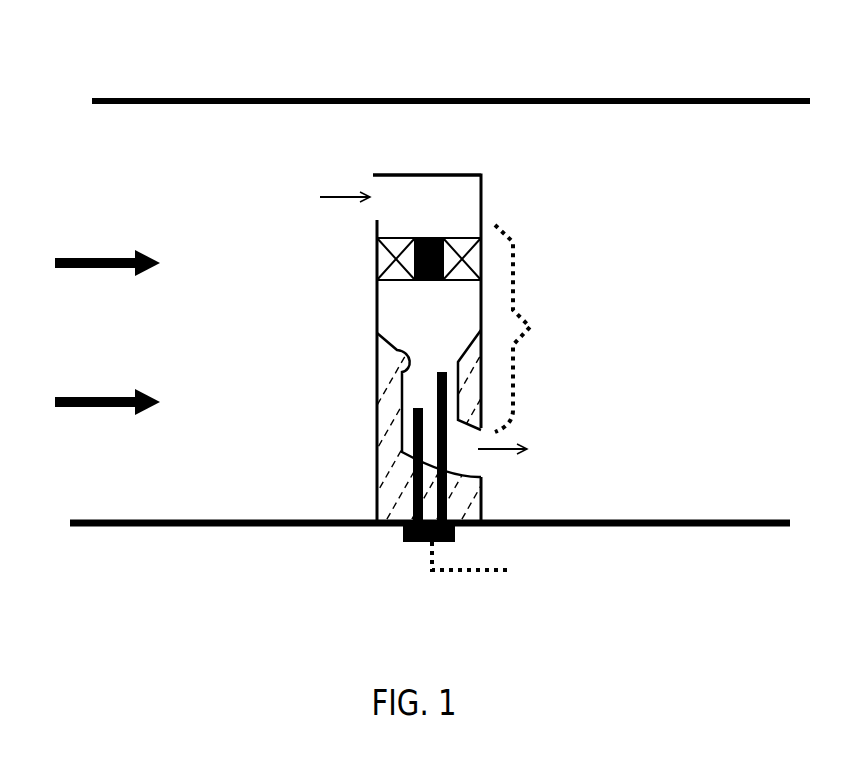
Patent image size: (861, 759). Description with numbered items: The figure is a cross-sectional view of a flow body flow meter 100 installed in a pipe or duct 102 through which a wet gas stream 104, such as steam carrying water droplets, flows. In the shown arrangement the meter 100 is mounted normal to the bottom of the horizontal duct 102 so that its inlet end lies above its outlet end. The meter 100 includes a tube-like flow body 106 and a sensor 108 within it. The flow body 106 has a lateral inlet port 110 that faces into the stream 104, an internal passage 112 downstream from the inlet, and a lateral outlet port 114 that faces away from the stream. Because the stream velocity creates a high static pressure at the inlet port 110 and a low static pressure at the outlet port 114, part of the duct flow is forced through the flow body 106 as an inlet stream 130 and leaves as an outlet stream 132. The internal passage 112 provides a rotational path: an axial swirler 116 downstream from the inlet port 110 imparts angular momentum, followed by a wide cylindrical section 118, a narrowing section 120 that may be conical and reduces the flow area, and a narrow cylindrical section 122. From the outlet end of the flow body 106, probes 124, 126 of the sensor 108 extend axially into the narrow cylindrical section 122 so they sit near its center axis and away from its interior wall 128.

The flow body flow meter 100 is at (312, 440).
The duct 102 is at (203, 100).
The wet gas stream 104 is at (85, 257).
The flow body 106 is at (416, 175).
The sensor 108 is at (403, 542).
The inlet port 110 is at (365, 184).
The internal passage 112 is at (540, 324).
The outlet port 114 is at (480, 460).
The axial swirler 116 is at (450, 278).
The wide cylindrical section 118 is at (435, 302).
The narrowing section 120 is at (436, 340).
The narrow cylindrical section 122 is at (420, 380).
The probe 124 is at (412, 420).
The probe 126 is at (445, 385).
The interior wall 128 is at (405, 360).
The inlet stream 130 is at (337, 197).
The outlet stream 132 is at (500, 452).